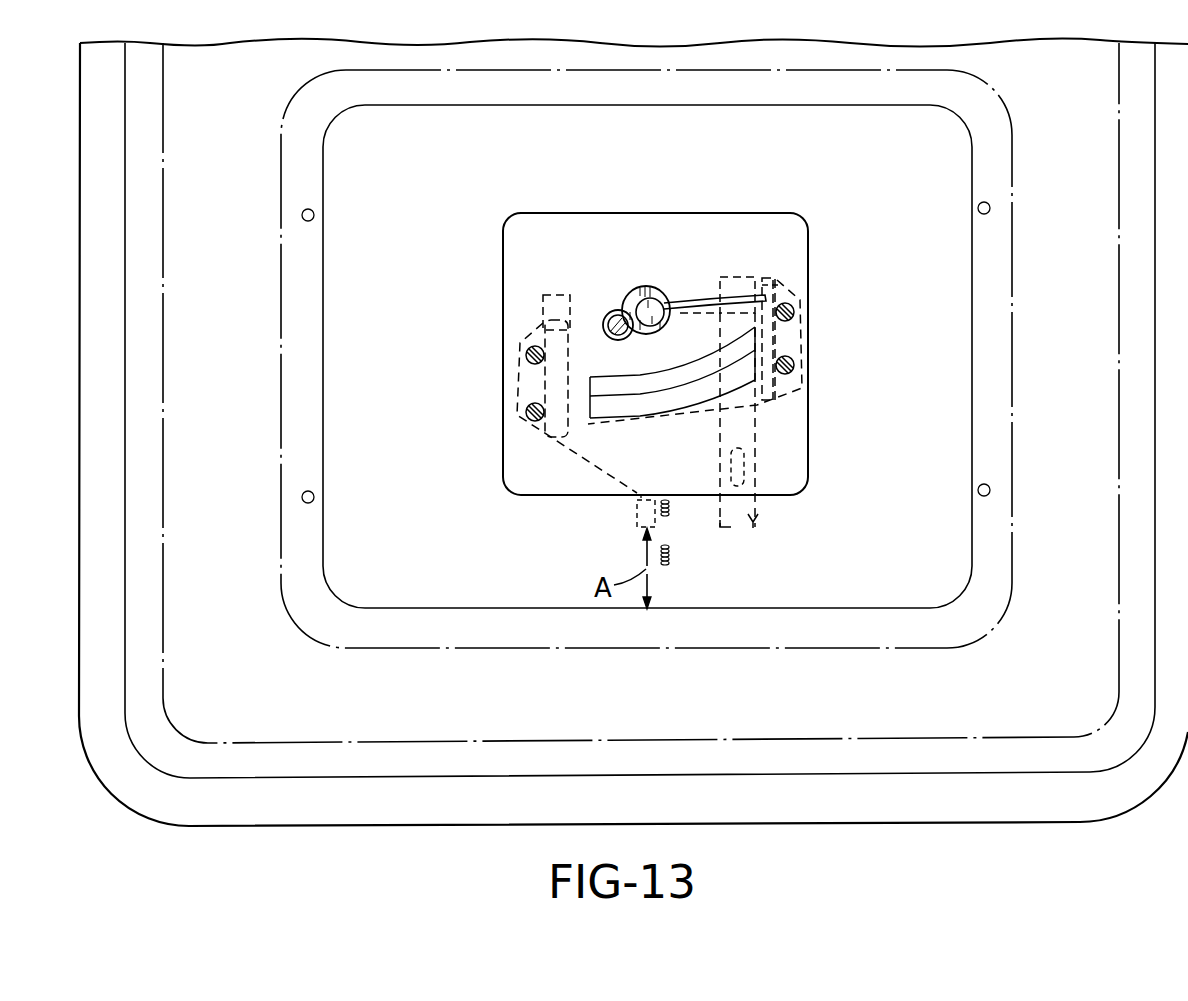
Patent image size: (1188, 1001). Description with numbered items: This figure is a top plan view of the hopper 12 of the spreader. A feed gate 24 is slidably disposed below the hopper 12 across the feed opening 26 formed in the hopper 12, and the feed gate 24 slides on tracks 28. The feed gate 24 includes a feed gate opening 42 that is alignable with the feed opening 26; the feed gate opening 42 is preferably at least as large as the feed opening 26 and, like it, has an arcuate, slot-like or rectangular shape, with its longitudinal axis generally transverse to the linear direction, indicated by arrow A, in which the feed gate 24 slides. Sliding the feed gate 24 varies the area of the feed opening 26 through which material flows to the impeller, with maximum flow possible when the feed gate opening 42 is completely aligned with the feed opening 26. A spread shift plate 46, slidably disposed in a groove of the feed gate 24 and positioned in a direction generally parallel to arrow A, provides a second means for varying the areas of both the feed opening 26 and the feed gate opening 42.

The hopper 12 is at (206, 212).
The feed gate 24 is at (660, 378).
The feed opening 26 is at (687, 368).
The tracks 28 is at (789, 292).
The feed gate opening 42 is at (602, 422).
The spread shift plate 46 is at (770, 521).